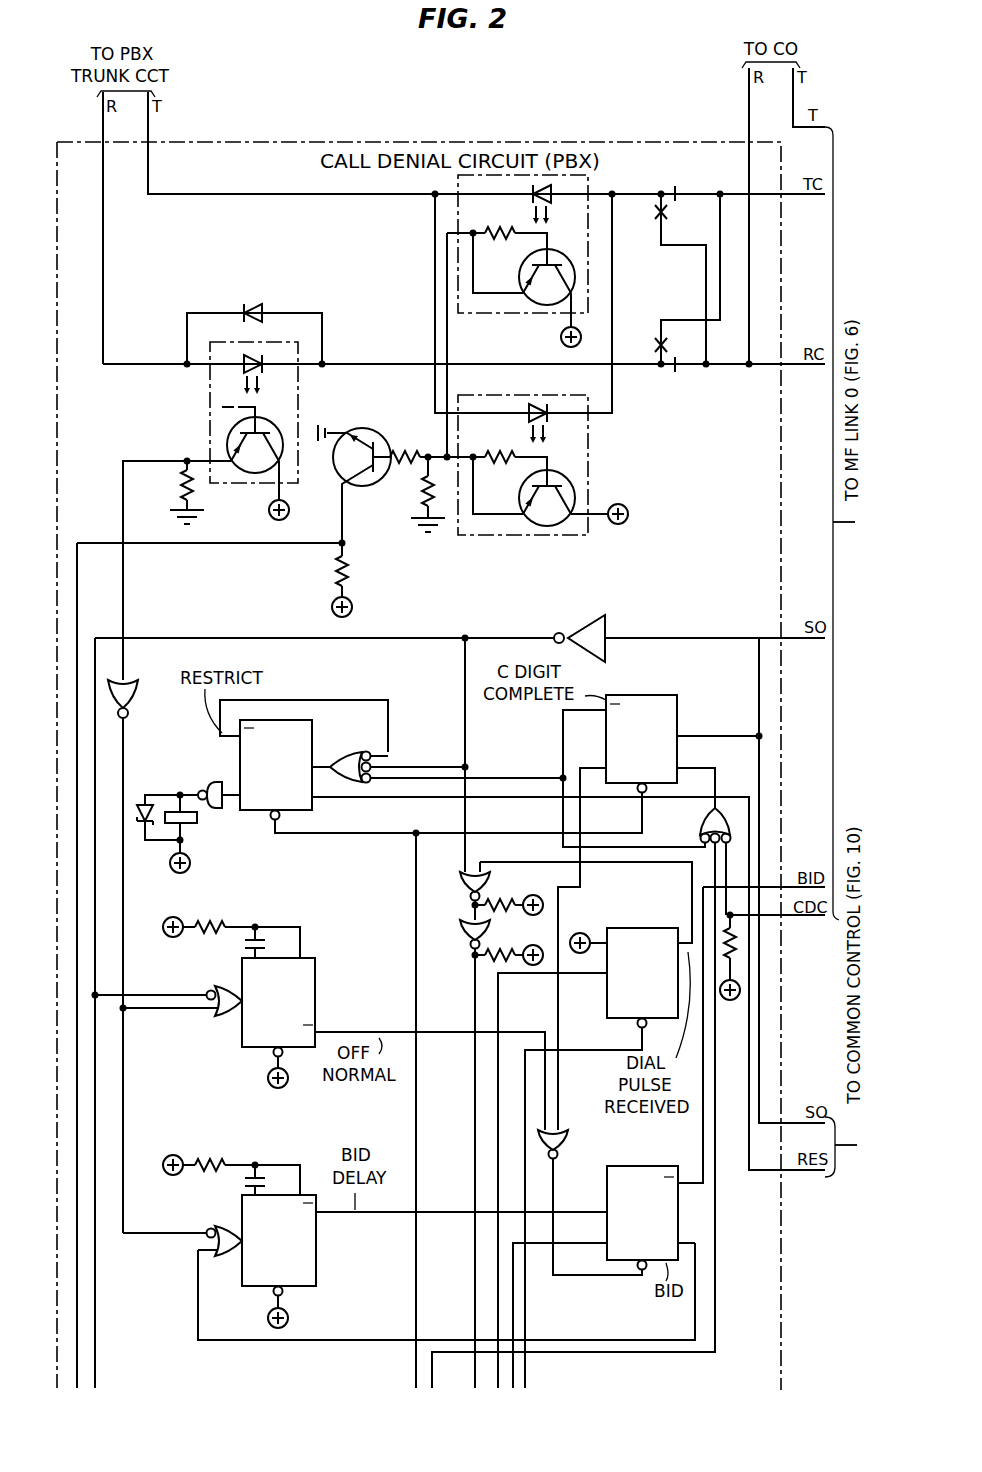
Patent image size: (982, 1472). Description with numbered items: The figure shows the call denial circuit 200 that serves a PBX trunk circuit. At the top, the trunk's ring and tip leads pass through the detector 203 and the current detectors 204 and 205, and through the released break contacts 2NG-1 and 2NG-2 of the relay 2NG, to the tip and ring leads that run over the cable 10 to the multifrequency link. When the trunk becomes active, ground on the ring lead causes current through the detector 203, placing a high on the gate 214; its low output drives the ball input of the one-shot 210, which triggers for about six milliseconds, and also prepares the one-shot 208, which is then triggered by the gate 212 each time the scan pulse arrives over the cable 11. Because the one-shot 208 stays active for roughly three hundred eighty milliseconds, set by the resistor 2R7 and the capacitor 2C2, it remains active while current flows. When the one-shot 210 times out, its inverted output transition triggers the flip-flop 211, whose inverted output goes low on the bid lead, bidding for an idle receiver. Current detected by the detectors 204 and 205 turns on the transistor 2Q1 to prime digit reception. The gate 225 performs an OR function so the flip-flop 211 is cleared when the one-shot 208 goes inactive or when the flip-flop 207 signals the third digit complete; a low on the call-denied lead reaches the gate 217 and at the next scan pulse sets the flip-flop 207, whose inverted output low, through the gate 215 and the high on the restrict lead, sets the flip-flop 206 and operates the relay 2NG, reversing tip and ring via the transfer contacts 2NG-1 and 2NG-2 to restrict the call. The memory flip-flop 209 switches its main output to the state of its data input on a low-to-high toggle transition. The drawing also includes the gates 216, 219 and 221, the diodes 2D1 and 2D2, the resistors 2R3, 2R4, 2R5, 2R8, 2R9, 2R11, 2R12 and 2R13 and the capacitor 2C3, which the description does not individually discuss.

The call denial circuit 200 is at (577, 142).
The detector 203 is at (210, 392).
The current detector 204 is at (493, 313).
The current detector 205 is at (578, 535).
The flip-flop 206 is at (280, 723).
The flip-flop 207 is at (644, 697).
The one-shot multivibrator 208 is at (315, 973).
The memory flip-flop 209 is at (640, 932).
The one-shot 210 is at (321, 1260).
The flip-flop 211 is at (657, 1166).
The gate 212 is at (590, 626).
The gate 214 is at (130, 694).
The gate 215 is at (338, 752).
The inverting gate 216 is at (216, 781).
The gate 217 is at (702, 818).
The NAND gate 219 is at (462, 877).
The NAND gate 221 is at (462, 927).
The gate 225 is at (560, 1140).
The diode 2D1 is at (253, 309).
The zener diode 2D2 is at (143, 799).
The relay 2NG is at (200, 833).
The transfer contact 2NG-1 is at (661, 190).
The break contact 2NG-2 is at (661, 377).
The transistor 2Q1 is at (375, 418).
The resistor 2R3 is at (163, 569).
The resistor 2R4 is at (231, 964).
The resistor 2R5 is at (414, 494).
The resistor 2R7 is at (211, 923).
The resistor 2R8 is at (493, 901).
The resistor 2R9 is at (493, 951).
The resistor 2R11 is at (211, 1162).
The resistor 2R12 is at (410, 443).
The resistor 2R13 is at (742, 950).
The capacitor 2C2 is at (240, 950).
The capacitor 2C3 is at (238, 1188).
The cable 10 is at (847, 540).
The cable 11 is at (849, 1162).